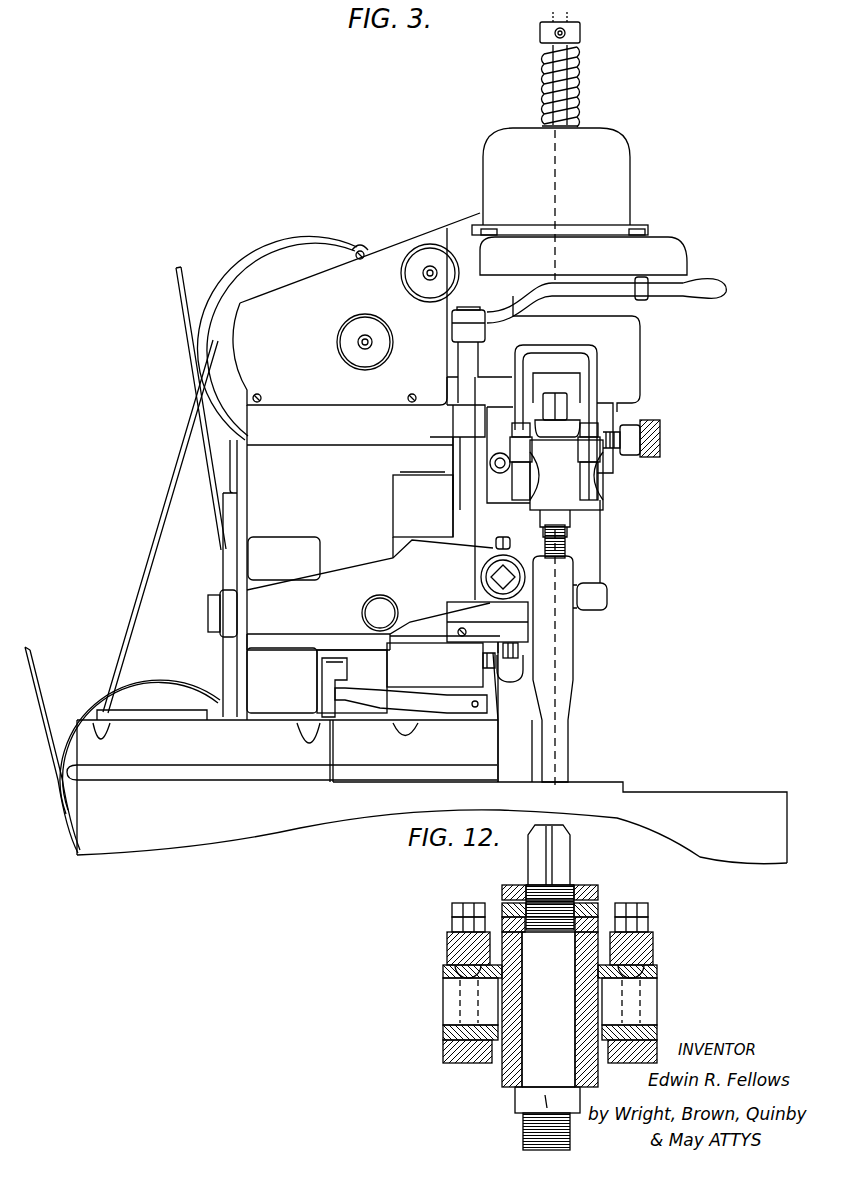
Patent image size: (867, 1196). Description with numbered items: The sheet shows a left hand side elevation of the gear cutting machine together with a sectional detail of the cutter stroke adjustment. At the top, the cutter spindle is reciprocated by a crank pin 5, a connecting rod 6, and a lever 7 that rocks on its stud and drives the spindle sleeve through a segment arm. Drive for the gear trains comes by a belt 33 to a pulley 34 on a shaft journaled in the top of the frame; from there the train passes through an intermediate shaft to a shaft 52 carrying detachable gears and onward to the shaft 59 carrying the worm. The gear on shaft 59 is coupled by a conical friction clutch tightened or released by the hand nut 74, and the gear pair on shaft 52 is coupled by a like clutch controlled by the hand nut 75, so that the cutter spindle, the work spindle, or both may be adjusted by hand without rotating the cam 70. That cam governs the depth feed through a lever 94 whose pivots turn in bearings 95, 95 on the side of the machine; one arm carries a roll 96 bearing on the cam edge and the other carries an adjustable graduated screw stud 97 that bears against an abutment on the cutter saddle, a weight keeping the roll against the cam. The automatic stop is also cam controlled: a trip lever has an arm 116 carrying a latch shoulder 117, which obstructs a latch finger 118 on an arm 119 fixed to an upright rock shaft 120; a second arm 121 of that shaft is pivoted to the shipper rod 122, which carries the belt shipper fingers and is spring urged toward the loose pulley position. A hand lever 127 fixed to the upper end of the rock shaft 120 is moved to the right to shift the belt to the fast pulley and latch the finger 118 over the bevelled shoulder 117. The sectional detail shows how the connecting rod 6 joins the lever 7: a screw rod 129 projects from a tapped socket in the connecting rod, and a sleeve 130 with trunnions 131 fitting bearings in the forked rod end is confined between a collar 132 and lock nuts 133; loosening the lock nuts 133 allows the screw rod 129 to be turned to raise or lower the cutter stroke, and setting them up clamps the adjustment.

In FIG. 3, the crank pin 5 is at (560, 24).
In FIG. 3, the connecting rod 6 is at (563, 694).
In FIG. 3, the lever 7 is at (575, 405).
In FIG. 12, the lever 7 is at (450, 948).
In FIG. 3, the belt 33 is at (180, 443).
In FIG. 3, the pulley 34 is at (232, 300).
In FIG. 3, the shaft 52 is at (362, 342).
In FIG. 3, the shaft 59 is at (427, 268).
In FIG. 3, the cam 70 is at (230, 519).
In FIG. 3, the nut or hand wheel 74 is at (432, 257).
In FIG. 3, the hand nut 75 is at (349, 351).
In FIG. 3, the lever 94 is at (327, 587).
In FIG. 3, the bearings 95 is at (405, 487).
In FIG. 3, the roll 96 is at (215, 603).
In FIG. 3, the screw stud 97 is at (497, 577).
In FIG. 3, the arm 116 is at (495, 656).
In FIG. 3, the latch shoulder 117 is at (522, 660).
In FIG. 3, the latch finger 118 is at (520, 645).
In FIG. 3, the arm 119 is at (520, 633).
In FIG. 3, the rock shaft 120 is at (455, 446).
In FIG. 3, the arm 121 is at (369, 696).
In FIG. 3, the shipper rod 122 is at (322, 672).
In FIG. 3, the hand lever 127 is at (703, 287).
In FIG. 3, the screw rod 129 is at (563, 545).
In FIG. 12, the screw rod 129 is at (523, 1125).
In FIG. 3, the sleeve 130 is at (567, 490).
In FIG. 12, the sleeve 130 is at (503, 1063).
In FIG. 12, the trunnions 131 is at (458, 1005).
In FIG. 12, the collar 132 is at (567, 1100).
In FIG. 12, the lock nuts 133 is at (600, 912).